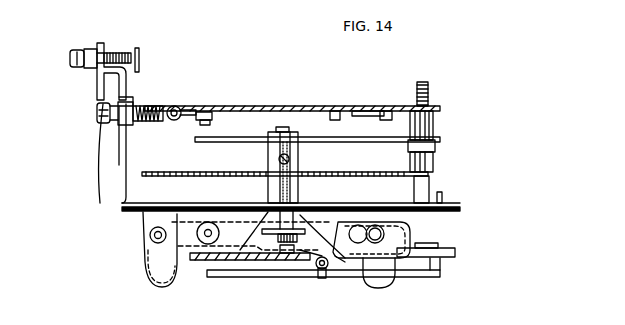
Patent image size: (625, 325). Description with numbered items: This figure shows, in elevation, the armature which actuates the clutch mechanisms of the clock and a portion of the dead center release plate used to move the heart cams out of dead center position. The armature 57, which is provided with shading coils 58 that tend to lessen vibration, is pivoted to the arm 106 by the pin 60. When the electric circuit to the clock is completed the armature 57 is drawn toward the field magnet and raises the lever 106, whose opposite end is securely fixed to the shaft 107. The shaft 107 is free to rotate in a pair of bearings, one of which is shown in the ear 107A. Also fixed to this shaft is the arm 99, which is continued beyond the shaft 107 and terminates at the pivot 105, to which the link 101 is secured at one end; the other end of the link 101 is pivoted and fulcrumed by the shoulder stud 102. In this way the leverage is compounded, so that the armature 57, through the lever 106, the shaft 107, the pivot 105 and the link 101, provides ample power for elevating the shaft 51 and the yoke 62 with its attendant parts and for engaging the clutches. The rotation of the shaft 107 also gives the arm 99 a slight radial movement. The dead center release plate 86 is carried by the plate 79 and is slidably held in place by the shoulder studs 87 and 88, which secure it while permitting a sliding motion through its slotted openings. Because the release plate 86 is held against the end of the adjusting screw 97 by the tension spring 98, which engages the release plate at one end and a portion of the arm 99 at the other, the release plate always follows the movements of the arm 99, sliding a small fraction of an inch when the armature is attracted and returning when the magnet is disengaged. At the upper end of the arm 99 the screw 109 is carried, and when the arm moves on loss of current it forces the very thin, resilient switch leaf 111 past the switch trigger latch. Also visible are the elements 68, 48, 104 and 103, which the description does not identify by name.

The screw 109 is at (80, 49).
The switch leaf 111 is at (139, 48).
The adjusting screw 97 is at (97, 107).
The tension spring 98 is at (147, 101).
The arm 99 is at (107, 162).
The dead center release plate 86 is at (186, 120).
The shoulder stud 87 is at (208, 120).
The plate 79 is at (313, 105).
The shoulder stud 88 is at (347, 117).
The threaded post 68 is at (440, 139).
The bar 48 is at (382, 173).
The base plate 104 is at (452, 205).
The shaft 51 is at (278, 196).
The yoke 62 is at (296, 228).
The pivot 105 is at (208, 222).
The shaft 107 is at (155, 236).
The ear 107A is at (152, 282).
The arm 106 is at (300, 264).
The armature 57 is at (433, 268).
The shading coils 58 is at (452, 250).
The link 103 is at (383, 283).
The shoulder stud 102 is at (384, 233).
The pin 60 is at (322, 272).
The link 101 is at (330, 270).